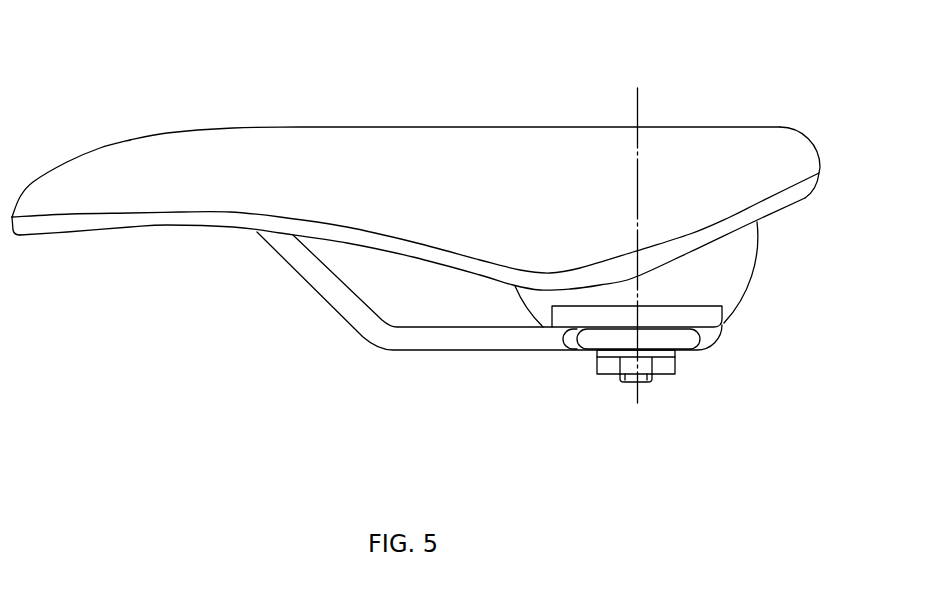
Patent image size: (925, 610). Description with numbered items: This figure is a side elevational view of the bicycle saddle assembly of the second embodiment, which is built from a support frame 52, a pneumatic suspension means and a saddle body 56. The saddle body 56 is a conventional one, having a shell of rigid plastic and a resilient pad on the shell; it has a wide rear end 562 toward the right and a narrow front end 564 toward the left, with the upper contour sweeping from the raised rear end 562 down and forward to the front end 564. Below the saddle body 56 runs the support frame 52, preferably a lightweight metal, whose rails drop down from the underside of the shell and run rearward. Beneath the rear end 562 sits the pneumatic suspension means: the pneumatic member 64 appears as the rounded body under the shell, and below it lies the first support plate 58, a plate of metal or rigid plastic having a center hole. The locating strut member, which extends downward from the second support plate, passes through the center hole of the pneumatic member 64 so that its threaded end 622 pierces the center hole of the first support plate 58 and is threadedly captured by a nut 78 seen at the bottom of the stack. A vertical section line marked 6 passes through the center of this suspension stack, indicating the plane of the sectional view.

The support frame 52 is at (416, 359).
The saddle body 56 is at (418, 140).
The rear end 562 is at (775, 145).
The front end 564 is at (82, 170).
The first support plate 58 is at (705, 313).
The pneumatic member 64 is at (772, 273).
The nut 78 is at (663, 365).
The threaded end 622 is at (650, 379).
The section line 6- 6 is at (667, 93).